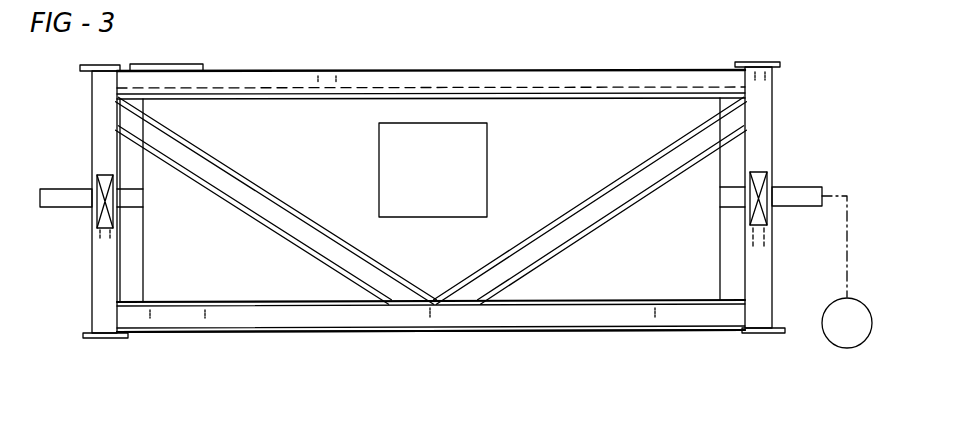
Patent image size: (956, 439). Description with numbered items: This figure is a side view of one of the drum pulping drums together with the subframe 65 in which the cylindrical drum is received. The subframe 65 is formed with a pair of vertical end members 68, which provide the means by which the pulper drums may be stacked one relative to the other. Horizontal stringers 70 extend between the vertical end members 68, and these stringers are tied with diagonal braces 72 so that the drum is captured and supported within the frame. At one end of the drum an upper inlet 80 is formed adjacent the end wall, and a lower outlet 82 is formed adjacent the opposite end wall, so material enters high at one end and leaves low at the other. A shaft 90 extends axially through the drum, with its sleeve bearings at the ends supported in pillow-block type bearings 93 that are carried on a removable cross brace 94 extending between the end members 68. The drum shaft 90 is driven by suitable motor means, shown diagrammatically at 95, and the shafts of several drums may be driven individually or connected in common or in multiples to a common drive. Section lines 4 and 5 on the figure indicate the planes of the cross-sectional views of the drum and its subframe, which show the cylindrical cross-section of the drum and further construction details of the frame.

The section line 4- 4 is at (29, 352).
The section line 5- 5 is at (470, 25).
The subframe 65 is at (265, 318).
The vertical end members 68 is at (100, 292).
The horizontal stringers 70 is at (295, 82).
The diagonal braces 72 is at (258, 206).
The upper inlet 80 is at (164, 64).
The lower outlet 82 is at (708, 330).
The shaft 90 is at (797, 190).
The pillow-block type bearings 93 is at (100, 212).
The removable cross brace 94 is at (737, 252).
The motor means 95 is at (832, 345).